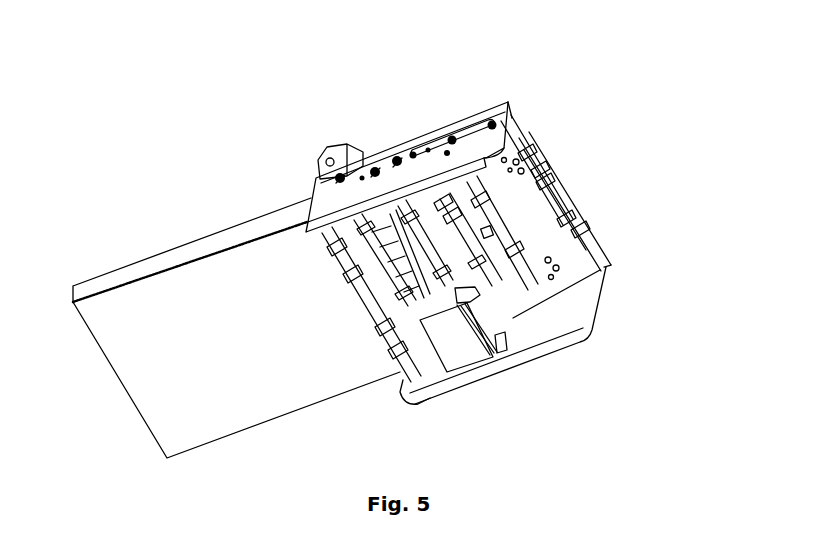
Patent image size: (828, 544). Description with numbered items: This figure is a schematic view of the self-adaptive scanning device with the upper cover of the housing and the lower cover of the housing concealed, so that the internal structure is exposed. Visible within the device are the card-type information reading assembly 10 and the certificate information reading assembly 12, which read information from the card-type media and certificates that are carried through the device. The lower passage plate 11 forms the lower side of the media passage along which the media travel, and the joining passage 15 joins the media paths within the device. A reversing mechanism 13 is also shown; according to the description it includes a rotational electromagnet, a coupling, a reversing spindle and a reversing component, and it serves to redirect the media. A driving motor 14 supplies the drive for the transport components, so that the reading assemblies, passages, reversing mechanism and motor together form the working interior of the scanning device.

The card-type information reading assembly 10 is at (527, 146).
The lower passage plate 11 is at (533, 226).
The certificate information reading assembly 12 is at (587, 280).
The reversing mechanism 13 is at (458, 296).
The driving motor 14 is at (476, 355).
The joining passage 15 is at (410, 336).